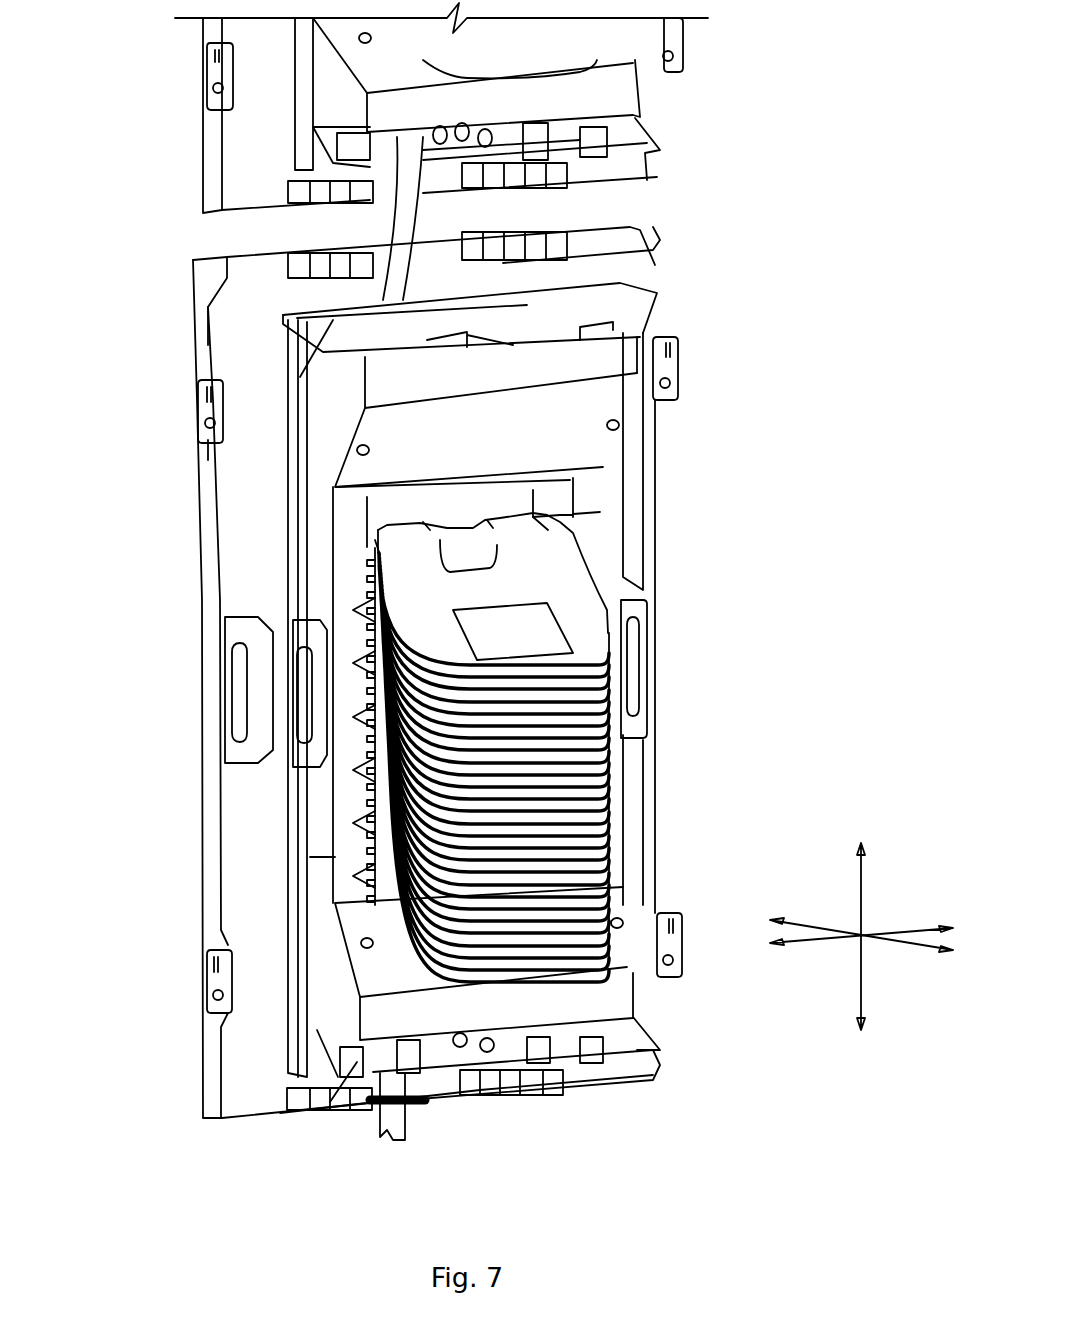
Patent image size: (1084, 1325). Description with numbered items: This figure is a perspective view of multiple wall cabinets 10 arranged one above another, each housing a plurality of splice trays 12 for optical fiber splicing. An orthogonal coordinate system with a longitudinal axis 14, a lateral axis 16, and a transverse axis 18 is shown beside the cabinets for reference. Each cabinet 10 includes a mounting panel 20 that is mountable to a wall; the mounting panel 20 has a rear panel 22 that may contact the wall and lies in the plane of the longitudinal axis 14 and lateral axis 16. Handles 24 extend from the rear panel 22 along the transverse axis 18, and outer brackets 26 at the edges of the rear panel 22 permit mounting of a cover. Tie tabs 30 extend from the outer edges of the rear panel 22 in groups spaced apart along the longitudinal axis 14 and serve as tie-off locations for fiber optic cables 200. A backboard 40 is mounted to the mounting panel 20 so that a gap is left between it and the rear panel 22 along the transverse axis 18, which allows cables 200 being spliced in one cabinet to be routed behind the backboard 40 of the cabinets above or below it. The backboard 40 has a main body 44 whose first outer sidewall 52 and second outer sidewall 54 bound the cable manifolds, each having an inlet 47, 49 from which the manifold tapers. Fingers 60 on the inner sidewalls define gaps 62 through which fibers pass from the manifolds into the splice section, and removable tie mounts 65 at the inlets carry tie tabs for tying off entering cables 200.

The wall cabinet 10 is at (128, 545).
The splice tray 12 is at (453, 700).
The longitudinal axis 14 is at (860, 892).
The lateral axis 16 is at (907, 927).
The transverse axis 18 is at (897, 943).
The mounting panel 20 is at (225, 257).
The rear panel 22 is at (430, 273).
The handle 24 is at (233, 632).
The outer bracket 26 is at (202, 415).
The tie tab 30 is at (545, 250).
The backboard 40 is at (650, 481).
The main body 44 is at (607, 397).
The inlet 47 is at (377, 343).
The inlet 49 is at (543, 333).
The first outer sidewall 52 is at (317, 580).
The second outer sidewall 54 is at (630, 810).
The finger 60 is at (360, 557).
The gap 62 is at (360, 543).
The removable tie mount 65 is at (563, 133).
The fiber optic cable 200 is at (400, 217).